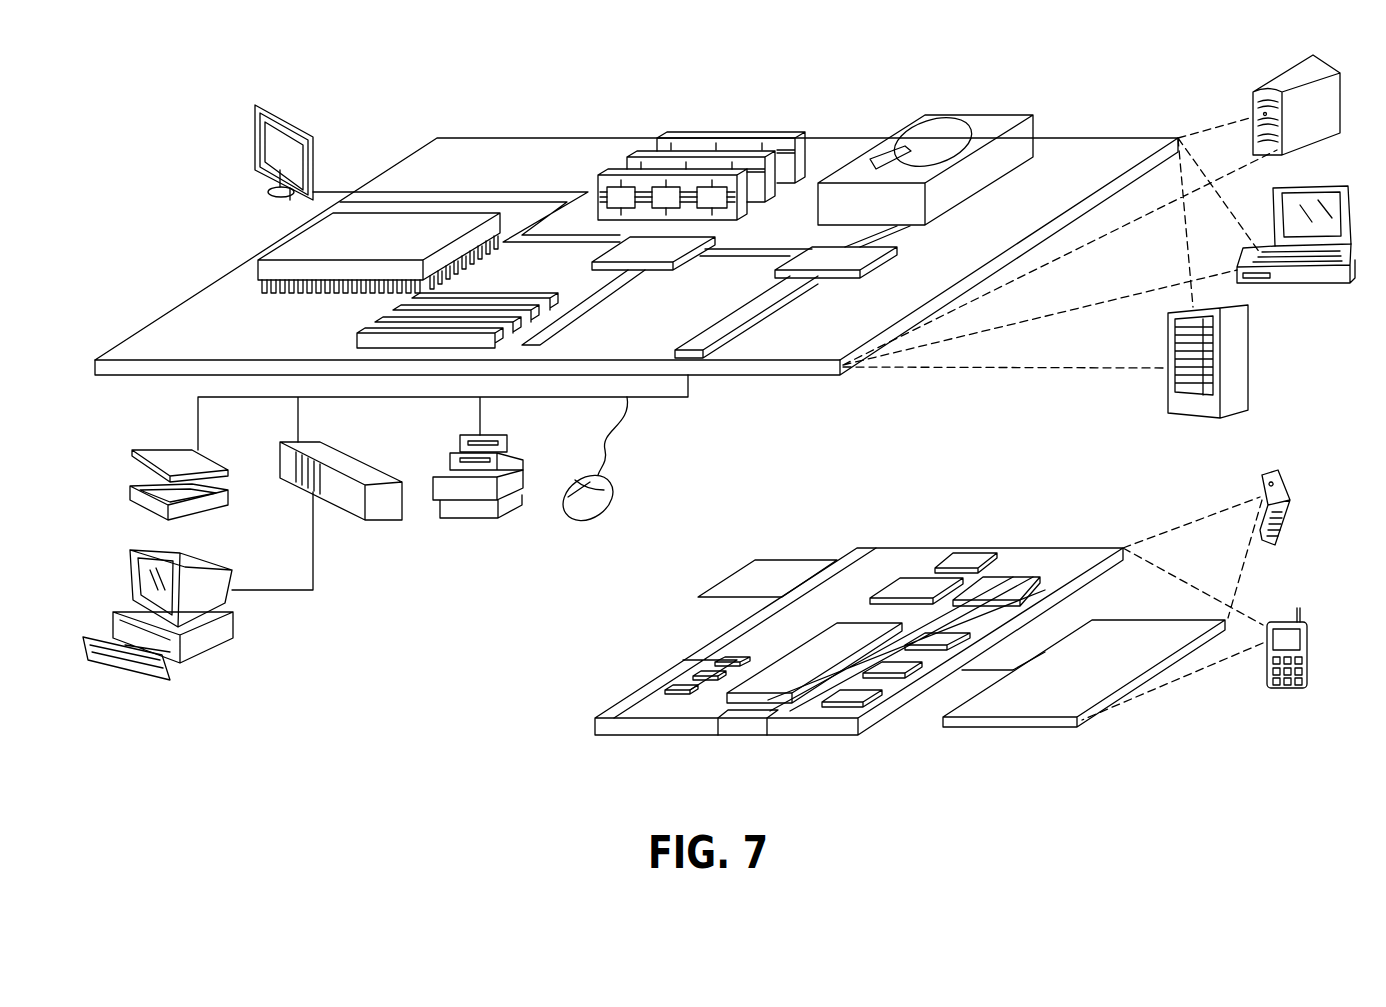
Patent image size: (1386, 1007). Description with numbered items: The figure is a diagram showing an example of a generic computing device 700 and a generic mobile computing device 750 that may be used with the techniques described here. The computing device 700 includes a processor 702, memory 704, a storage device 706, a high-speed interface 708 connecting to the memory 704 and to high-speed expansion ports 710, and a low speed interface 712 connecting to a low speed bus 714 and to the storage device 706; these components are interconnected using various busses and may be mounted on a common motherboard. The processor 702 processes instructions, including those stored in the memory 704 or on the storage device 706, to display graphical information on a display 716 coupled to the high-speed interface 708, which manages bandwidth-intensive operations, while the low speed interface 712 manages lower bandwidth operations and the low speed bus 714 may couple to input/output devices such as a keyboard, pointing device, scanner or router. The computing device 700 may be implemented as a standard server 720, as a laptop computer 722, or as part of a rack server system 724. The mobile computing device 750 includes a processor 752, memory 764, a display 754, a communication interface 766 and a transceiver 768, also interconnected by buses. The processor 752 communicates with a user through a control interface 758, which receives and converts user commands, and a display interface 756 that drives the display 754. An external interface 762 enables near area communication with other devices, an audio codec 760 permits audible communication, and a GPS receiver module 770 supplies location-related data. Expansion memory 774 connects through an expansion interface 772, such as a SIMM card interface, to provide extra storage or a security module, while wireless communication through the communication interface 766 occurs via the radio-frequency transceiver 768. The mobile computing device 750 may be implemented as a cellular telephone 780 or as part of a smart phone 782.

The computing device 700 is at (392, 80).
The processor 702 is at (284, 243).
The memory 704 is at (733, 135).
The storage device 706 is at (965, 117).
The high-speed interface 708 is at (667, 265).
The high-speed expansion ports 710 is at (380, 322).
The low speed interface 712 is at (810, 252).
The low speed bus 714 is at (698, 347).
The display 716 is at (257, 106).
The standard server 720 is at (1270, 86).
The laptop computer 722 is at (1329, 186).
The rack server system 724 is at (1250, 362).
The mobile computing device 750 is at (545, 747).
The processor 752 is at (782, 668).
The display 754 is at (1124, 637).
The display interface 756 is at (863, 697).
The control interface 758 is at (900, 665).
The audio codec 760 is at (940, 636).
The external interface 762 is at (743, 720).
The memory 764 is at (690, 672).
The communication interface 766 is at (913, 577).
The transceiver 768 is at (1008, 577).
The GPS receiver module 770 is at (966, 558).
The expansion interface 772 is at (837, 560).
The expansion memory 774 is at (755, 560).
The cellular telephone 780 is at (1270, 473).
The smart phone 782 is at (1281, 622).